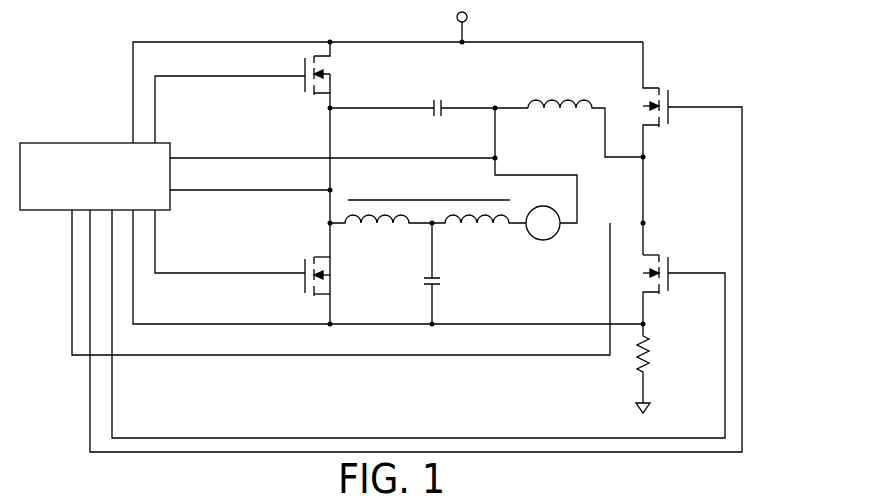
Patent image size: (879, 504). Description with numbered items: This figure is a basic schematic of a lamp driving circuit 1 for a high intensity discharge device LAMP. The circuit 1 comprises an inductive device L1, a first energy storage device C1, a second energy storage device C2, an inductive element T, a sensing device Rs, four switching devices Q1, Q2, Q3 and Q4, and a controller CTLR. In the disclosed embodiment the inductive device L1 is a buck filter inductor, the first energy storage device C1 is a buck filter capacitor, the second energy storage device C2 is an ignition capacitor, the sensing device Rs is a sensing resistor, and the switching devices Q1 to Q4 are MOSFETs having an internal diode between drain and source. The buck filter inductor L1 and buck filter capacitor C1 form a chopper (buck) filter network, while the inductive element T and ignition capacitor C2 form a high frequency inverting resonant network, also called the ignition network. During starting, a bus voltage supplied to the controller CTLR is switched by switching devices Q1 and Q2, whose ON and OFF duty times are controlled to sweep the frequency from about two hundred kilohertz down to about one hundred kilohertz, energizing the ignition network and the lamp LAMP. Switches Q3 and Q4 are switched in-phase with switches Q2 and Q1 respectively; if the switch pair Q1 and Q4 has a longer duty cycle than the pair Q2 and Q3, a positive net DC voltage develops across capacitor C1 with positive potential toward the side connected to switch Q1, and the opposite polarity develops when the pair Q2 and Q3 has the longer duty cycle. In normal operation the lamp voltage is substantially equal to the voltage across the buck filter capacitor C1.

The lamp driving circuit 1 is at (411, 229).
The controller CTLR is at (94, 143).
The switching device Q1 is at (303, 75).
The switching device Q2 is at (303, 271).
The switching device Q3 is at (669, 148).
The switching device Q4 is at (669, 287).
The first energy storage device C1 is at (429, 101).
The second energy storage device C2 is at (445, 273).
The inductive device L1 is at (585, 117).
The inductive element T is at (428, 201).
The sensing device Rs is at (659, 369).
The high intensity discharge (HID) device LAMP is at (546, 237).